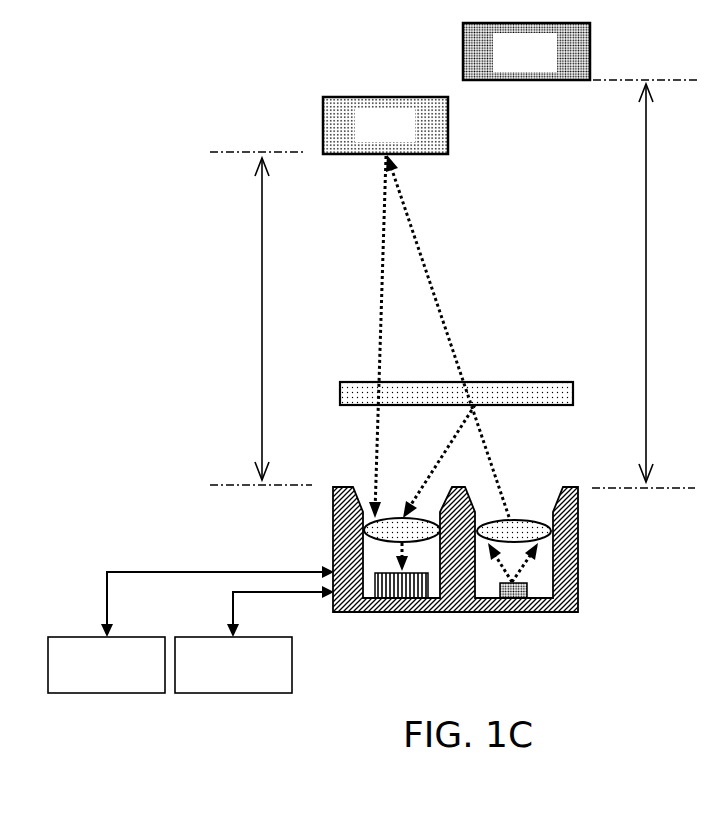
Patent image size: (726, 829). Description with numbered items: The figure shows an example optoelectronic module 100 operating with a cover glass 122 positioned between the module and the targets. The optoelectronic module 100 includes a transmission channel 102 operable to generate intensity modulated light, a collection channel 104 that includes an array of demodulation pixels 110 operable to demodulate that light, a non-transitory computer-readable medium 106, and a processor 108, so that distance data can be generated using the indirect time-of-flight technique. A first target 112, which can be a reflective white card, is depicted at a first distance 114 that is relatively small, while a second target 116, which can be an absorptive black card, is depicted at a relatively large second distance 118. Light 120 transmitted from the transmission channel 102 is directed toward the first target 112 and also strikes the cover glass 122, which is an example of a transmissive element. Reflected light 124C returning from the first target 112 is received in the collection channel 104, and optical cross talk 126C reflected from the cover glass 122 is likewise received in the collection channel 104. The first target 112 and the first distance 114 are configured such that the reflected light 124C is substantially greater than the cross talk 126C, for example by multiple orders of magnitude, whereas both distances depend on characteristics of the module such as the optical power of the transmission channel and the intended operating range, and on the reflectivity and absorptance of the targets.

The optoelectronic module 100 is at (337, 620).
The transmission channel 102 is at (534, 489).
The collection channel 104 is at (366, 462).
The non-transitory computer-readable medium 106 is at (191, 629).
The processor 108 is at (254, 639).
The array of demodulation pixels 110 is at (387, 576).
The first target 112 is at (385, 125).
The first distance 114 is at (262, 316).
The second target 116 is at (526, 51).
The second distance 118 is at (646, 270).
The light 120 is at (488, 448).
The cover glass 122 is at (555, 395).
The reflected light 124C is at (378, 326).
The optical cross talk 126C is at (449, 448).